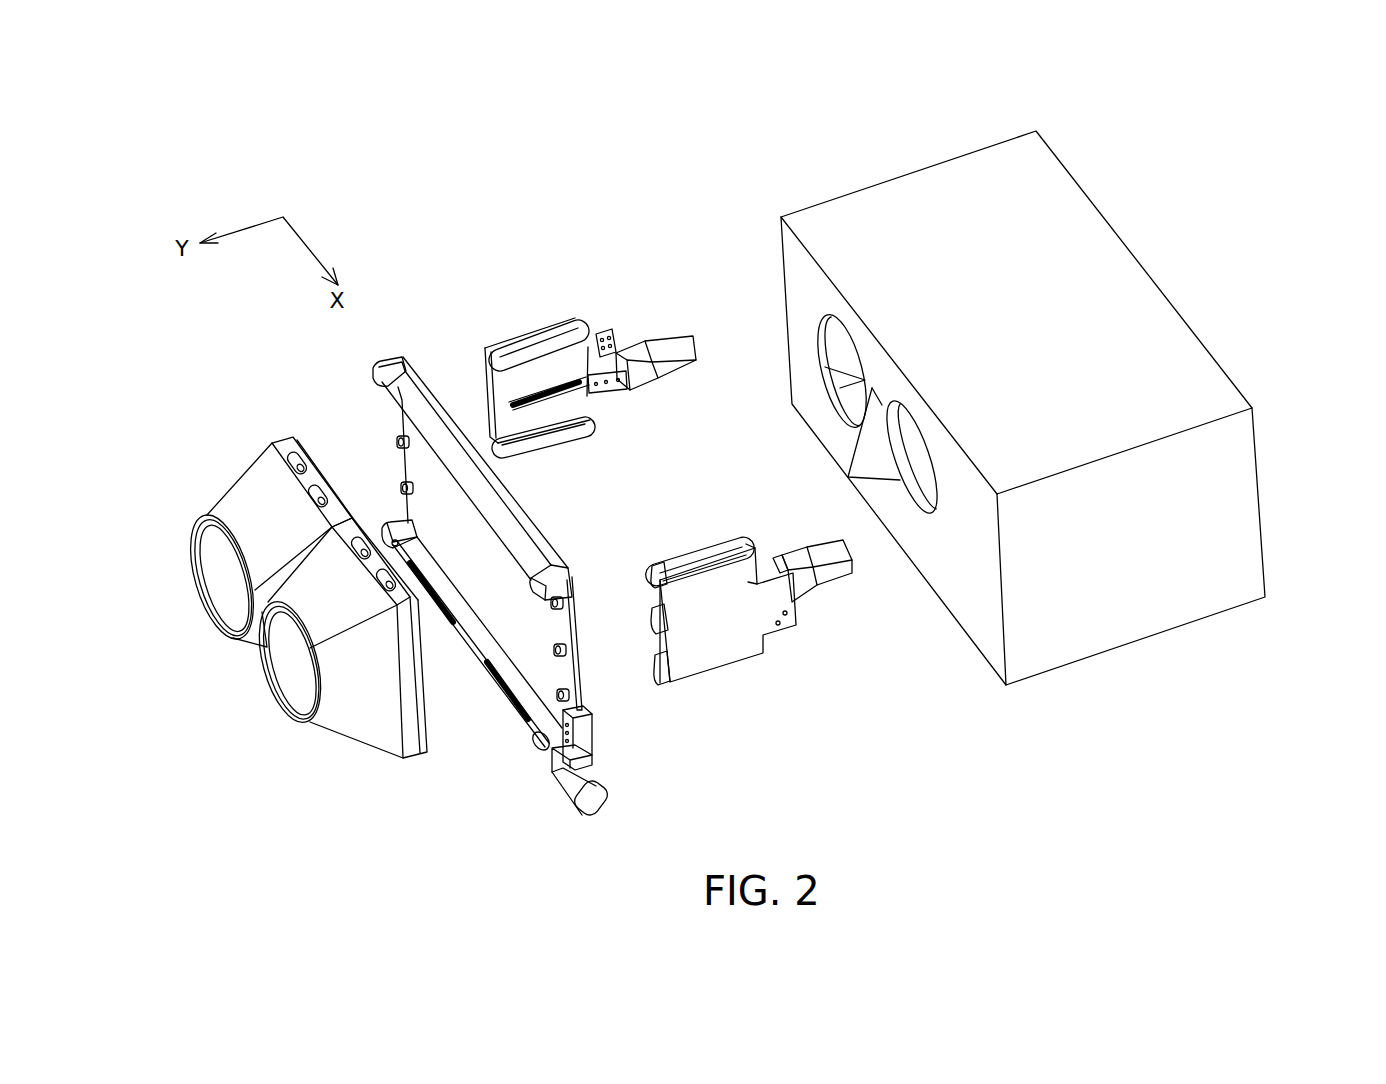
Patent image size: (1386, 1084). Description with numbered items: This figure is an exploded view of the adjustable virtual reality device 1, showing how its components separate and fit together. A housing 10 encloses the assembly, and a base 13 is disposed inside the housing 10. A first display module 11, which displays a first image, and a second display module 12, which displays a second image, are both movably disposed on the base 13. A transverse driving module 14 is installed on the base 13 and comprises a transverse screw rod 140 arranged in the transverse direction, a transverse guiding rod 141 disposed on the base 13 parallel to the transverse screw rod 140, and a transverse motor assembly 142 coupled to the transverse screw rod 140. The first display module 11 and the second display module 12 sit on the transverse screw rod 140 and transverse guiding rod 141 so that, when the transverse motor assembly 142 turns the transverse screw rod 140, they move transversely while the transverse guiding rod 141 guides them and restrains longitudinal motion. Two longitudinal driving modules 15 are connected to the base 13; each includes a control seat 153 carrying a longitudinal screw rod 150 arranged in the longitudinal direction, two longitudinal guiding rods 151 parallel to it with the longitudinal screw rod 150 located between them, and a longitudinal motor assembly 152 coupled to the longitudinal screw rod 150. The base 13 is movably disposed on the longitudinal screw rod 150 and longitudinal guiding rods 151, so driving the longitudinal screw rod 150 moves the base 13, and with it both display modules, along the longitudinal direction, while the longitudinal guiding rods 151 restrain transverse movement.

The adjustable virtual reality device 1 is at (1260, 138).
The housing 10 is at (1119, 267).
The first display module 11 is at (236, 497).
The second display module 12 is at (368, 740).
The base 13 is at (393, 366).
The transverse driving module 14 is at (496, 766).
The transverse screw rod 140 is at (469, 640).
The transverse guiding rod 141 is at (466, 489).
The transverse motor assembly 142 is at (603, 797).
The longitudinal driving module 15 is at (609, 262).
The longitudinal screw rod 150 is at (582, 392).
The longitudinal guiding rod 151 is at (560, 340).
The longitudinal motor assembly 152 is at (680, 362).
The control seat 153 is at (510, 338).